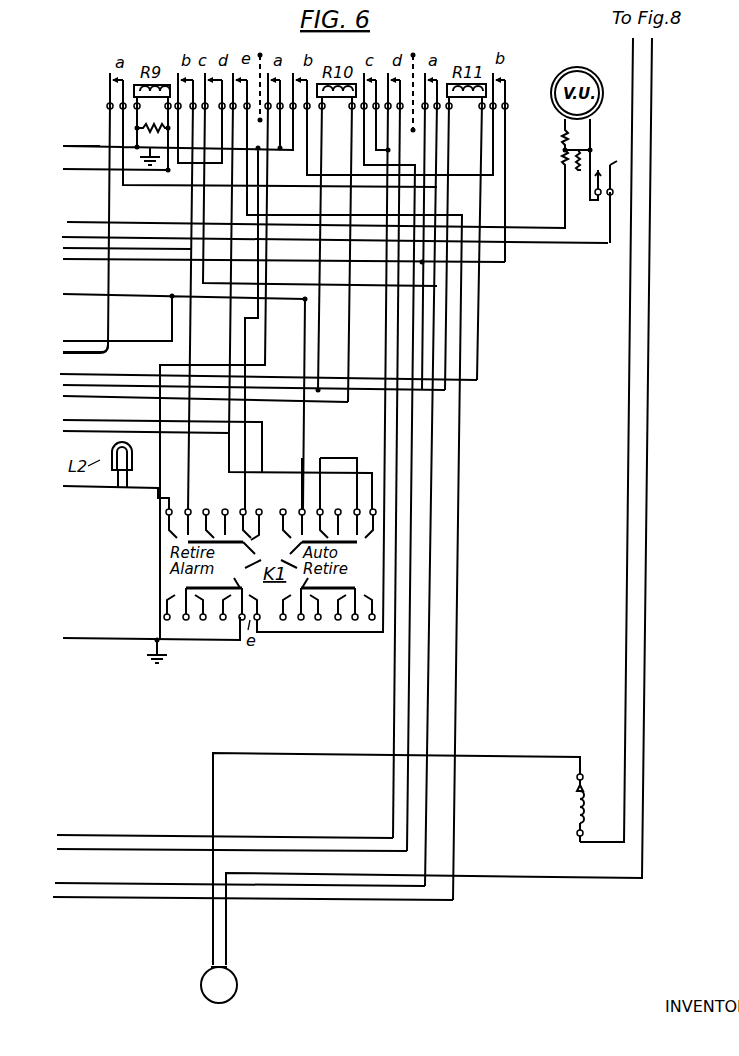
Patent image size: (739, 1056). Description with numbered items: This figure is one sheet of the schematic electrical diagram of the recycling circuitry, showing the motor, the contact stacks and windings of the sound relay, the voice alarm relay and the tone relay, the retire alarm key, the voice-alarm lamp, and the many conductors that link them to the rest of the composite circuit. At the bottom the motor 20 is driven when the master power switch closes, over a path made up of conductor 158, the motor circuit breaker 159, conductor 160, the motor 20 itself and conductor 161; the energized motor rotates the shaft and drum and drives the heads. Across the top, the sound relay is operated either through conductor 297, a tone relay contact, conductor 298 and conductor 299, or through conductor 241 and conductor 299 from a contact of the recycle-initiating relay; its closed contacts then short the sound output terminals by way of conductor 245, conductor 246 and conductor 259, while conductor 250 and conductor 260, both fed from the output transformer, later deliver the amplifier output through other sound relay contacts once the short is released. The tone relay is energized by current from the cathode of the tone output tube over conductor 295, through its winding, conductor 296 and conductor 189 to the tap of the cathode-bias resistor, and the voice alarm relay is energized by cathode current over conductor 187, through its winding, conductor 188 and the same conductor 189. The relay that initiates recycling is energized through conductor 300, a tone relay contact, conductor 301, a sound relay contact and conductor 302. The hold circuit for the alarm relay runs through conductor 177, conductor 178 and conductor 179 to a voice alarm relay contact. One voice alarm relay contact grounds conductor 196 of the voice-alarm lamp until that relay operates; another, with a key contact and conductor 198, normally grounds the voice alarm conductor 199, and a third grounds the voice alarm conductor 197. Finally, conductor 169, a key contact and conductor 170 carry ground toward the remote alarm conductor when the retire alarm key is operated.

The motor 20 is at (213, 1003).
The conductor 158 is at (633, 60).
The motor circuit breaker 159 is at (568, 823).
The conductor 160 is at (293, 744).
The conductor 161 is at (652, 63).
The conductor 169 is at (250, 418).
The conductor 170 is at (262, 452).
The conductor 177 is at (72, 338).
The conductor 178 is at (221, 295).
The conductor 179 is at (270, 216).
The conductor 187 is at (58, 399).
The conductor 188 is at (322, 340).
The conductor 189 is at (62, 378).
The conductor 196 is at (263, 352).
The voice alarm conductor 197 is at (405, 676).
The conductor 198 is at (314, 638).
The voice alarm conductor 199 is at (73, 827).
The conductor 241 is at (94, 174).
The conductor 245 is at (112, 228).
The conductor 246 is at (236, 213).
The conductor 250 is at (82, 907).
The conductor 259 is at (68, 237).
The conductor 260 is at (85, 880).
The conductor 295 is at (90, 380).
The conductor 296 is at (482, 152).
The conductor 297 is at (533, 185).
The conductor 298 is at (328, 170).
The conductor 299 is at (150, 112).
The conductor 300 is at (428, 205).
The conductor 301 is at (368, 252).
The conductor 302 is at (104, 364).